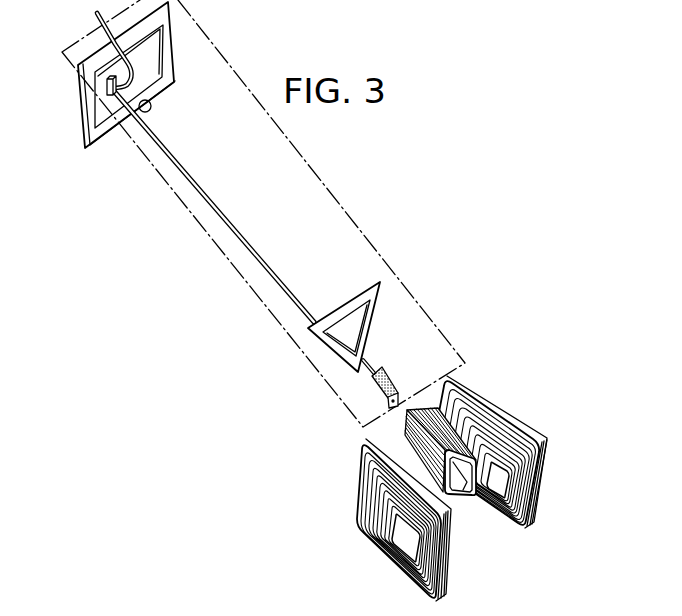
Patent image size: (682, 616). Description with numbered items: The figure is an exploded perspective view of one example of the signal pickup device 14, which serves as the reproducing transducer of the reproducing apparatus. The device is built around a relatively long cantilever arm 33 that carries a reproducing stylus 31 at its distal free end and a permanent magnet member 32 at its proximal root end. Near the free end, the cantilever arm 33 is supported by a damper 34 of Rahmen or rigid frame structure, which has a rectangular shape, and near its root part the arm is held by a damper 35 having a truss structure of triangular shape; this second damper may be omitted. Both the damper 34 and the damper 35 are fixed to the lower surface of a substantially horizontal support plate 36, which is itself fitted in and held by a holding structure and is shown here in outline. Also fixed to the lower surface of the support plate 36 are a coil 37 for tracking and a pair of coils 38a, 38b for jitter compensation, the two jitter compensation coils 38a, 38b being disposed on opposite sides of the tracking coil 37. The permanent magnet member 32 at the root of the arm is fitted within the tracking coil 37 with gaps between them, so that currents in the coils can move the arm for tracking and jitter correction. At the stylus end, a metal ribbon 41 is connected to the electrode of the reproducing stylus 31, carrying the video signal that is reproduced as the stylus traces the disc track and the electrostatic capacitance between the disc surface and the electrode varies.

The signal pickup device 14 is at (334, 153).
The reproducing stylus 31 is at (106, 89).
The permanent magnet member 32 is at (366, 413).
The cantilever arm 33 is at (240, 221).
The damper 34 is at (175, 63).
The damper 35 is at (357, 293).
The support plate 36 is at (360, 224).
The tracking coil 37 is at (465, 497).
The jitter compensation coil 38a is at (359, 540).
The jitter compensation coil 38b is at (515, 423).
The metal ribbon 41 is at (96, 16).